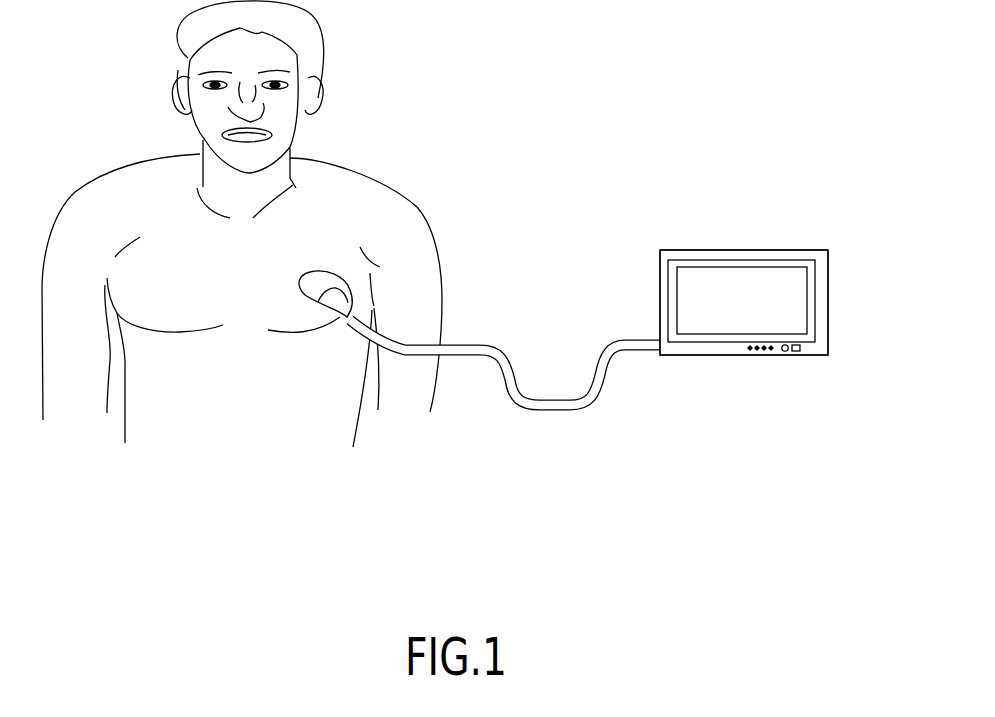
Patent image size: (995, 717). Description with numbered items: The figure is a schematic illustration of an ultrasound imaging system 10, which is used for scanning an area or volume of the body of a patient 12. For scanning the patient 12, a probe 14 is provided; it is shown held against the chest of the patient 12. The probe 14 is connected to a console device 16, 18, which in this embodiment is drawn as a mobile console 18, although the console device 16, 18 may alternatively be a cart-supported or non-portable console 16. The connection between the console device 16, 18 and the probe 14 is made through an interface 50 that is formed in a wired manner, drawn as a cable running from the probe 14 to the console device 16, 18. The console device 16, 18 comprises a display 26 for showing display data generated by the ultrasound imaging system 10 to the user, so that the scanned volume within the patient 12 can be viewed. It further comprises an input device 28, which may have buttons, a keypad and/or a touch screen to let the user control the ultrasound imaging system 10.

The ultrasound imaging system 10 is at (714, 104).
The patient 12 is at (368, 197).
The probe 14 is at (338, 268).
The console device 16 is at (736, 250).
The mobile console 18 is at (744, 302).
The display 26 is at (765, 278).
The input device 28 is at (802, 368).
The interface 50 is at (545, 410).